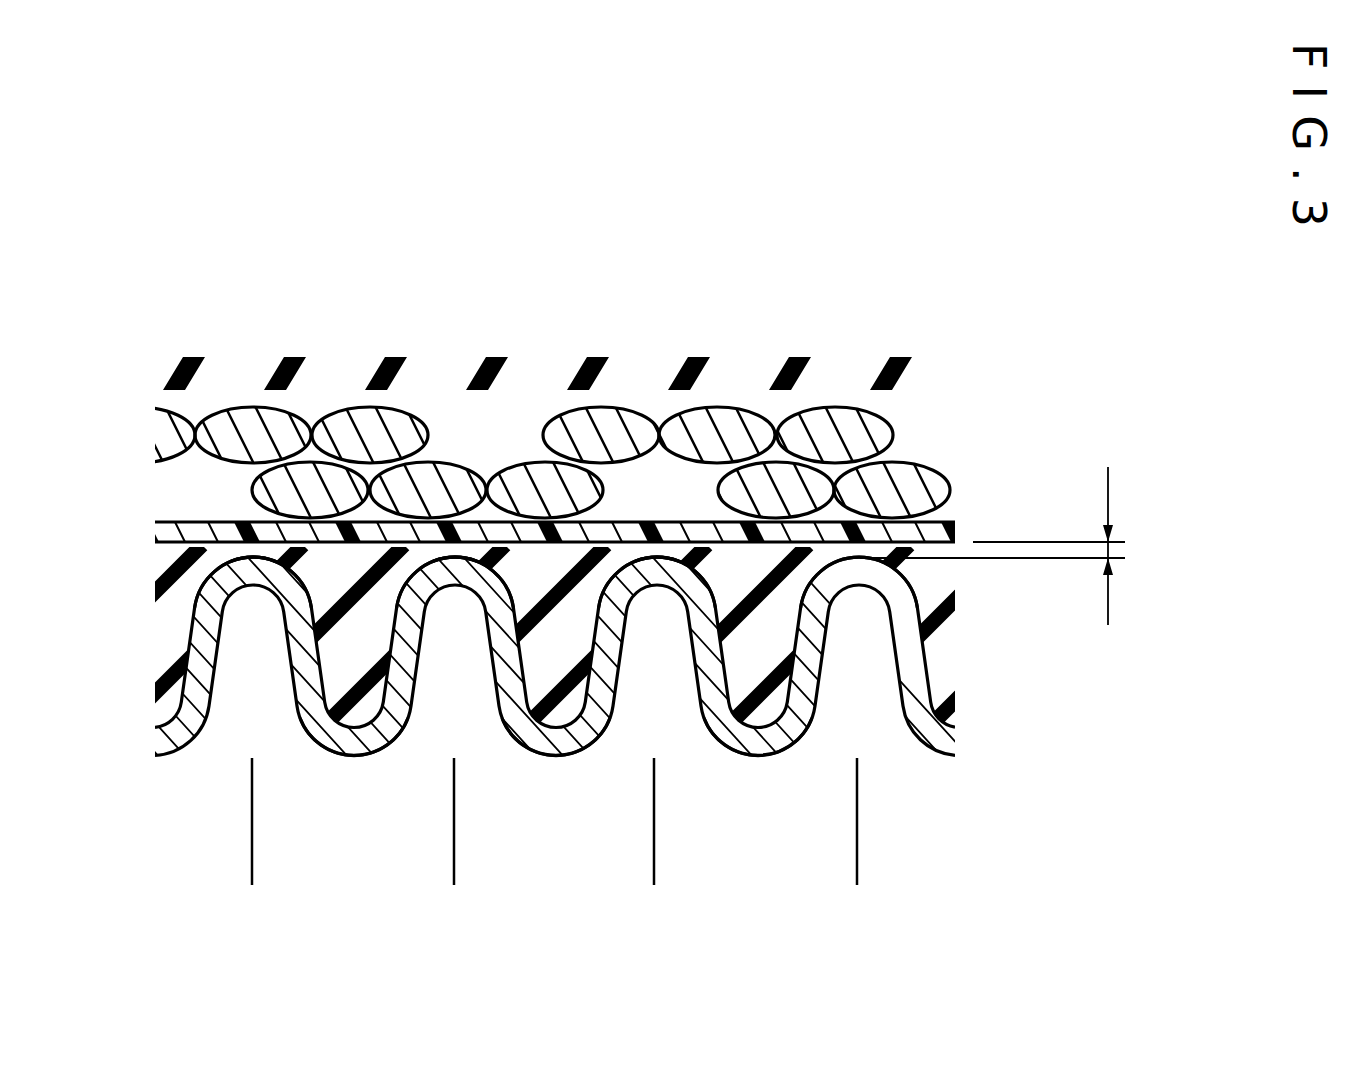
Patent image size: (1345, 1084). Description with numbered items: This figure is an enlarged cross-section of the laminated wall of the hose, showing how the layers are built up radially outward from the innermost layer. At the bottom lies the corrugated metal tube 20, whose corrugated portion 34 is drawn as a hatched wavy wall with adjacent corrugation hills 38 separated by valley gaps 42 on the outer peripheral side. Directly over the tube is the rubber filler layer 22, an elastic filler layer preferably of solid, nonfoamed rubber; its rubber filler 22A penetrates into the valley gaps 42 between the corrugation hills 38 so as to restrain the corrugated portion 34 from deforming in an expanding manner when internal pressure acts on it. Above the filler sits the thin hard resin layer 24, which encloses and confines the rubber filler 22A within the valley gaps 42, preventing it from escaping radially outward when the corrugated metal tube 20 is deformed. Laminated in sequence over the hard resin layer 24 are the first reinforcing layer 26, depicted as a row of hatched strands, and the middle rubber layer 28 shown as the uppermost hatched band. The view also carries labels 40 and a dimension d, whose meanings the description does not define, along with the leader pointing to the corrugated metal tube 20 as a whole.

The corrugated metal tube 20 is at (475, 817).
The rubber filler layer 22 is at (768, 630).
The rubber filler 22A is at (732, 675).
The hard resin layer 24 is at (780, 532).
The first reinforcing layer 26 is at (908, 483).
The middle rubber layer 28 is at (843, 373).
The corrugated portion 34 is at (190, 752).
The corrugation hills 38 is at (450, 568).
The concave portions 40 is at (751, 755).
The valley gaps 42 is at (404, 742).
The gap distance d is at (1013, 546).